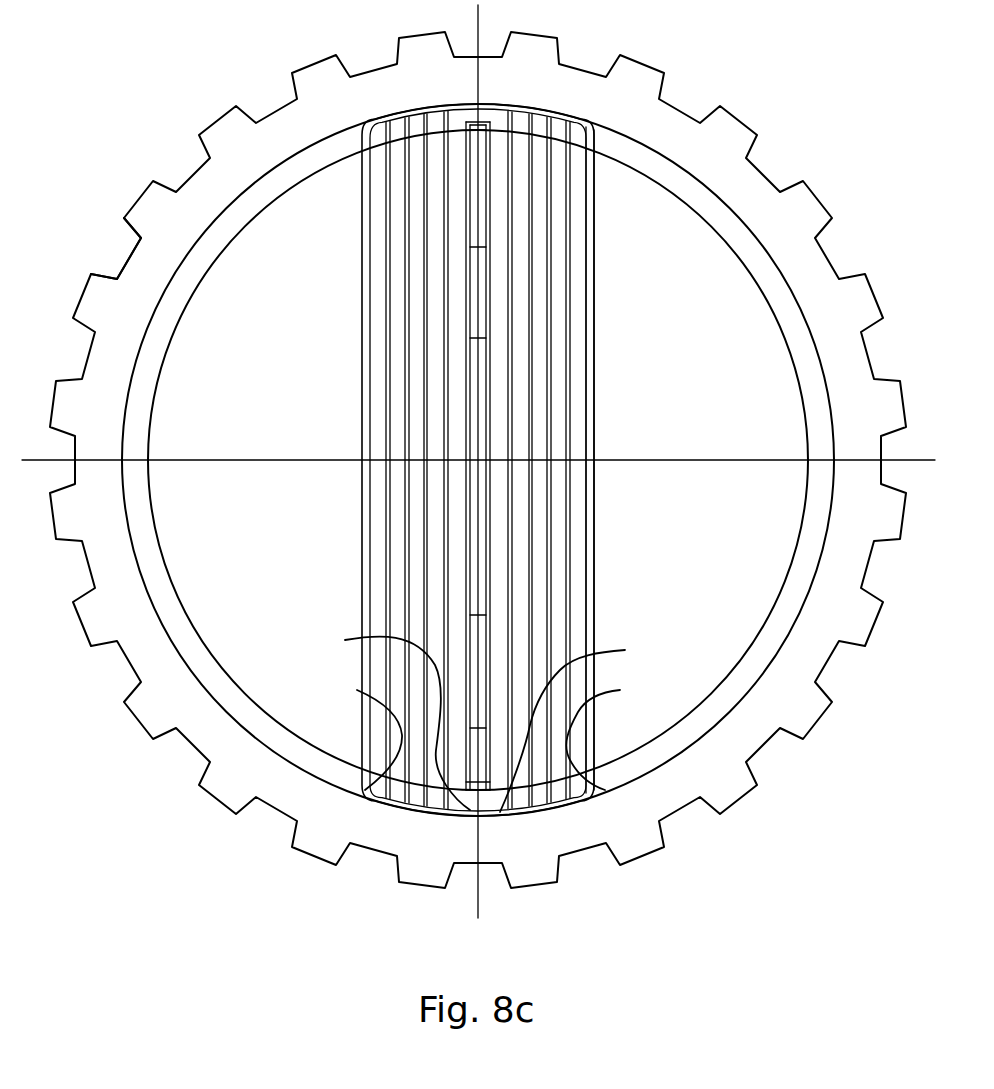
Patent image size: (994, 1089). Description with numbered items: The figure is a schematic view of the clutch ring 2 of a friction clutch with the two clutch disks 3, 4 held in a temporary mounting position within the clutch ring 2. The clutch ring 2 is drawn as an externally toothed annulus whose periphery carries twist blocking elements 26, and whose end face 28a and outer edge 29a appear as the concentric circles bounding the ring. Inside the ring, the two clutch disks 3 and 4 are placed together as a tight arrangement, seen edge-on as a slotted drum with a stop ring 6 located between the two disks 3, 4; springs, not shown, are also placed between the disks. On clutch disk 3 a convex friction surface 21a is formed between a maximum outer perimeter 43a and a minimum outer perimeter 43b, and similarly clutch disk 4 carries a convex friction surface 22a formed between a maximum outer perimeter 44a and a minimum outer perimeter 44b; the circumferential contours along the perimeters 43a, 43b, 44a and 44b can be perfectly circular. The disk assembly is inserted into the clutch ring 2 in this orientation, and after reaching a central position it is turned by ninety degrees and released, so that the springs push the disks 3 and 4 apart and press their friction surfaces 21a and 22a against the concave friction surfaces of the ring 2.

The clutch ring 2 is at (272, 110).
The twist blocking elements 26 is at (138, 198).
The end face 28a is at (224, 219).
The outer edge 29a is at (160, 354).
The stop ring 6 is at (485, 207).
The clutch disk 4 is at (484, 460).
The clutch disk 3 is at (597, 383).
The convex friction surface 22a is at (380, 545).
The convex friction surface 21a is at (582, 557).
The maximum outer perimeter 44a is at (385, 719).
The minimum outer perimeter 44b is at (353, 732).
The maximum outer perimeter 43a is at (586, 723).
The minimum outer perimeter 43b is at (616, 734).